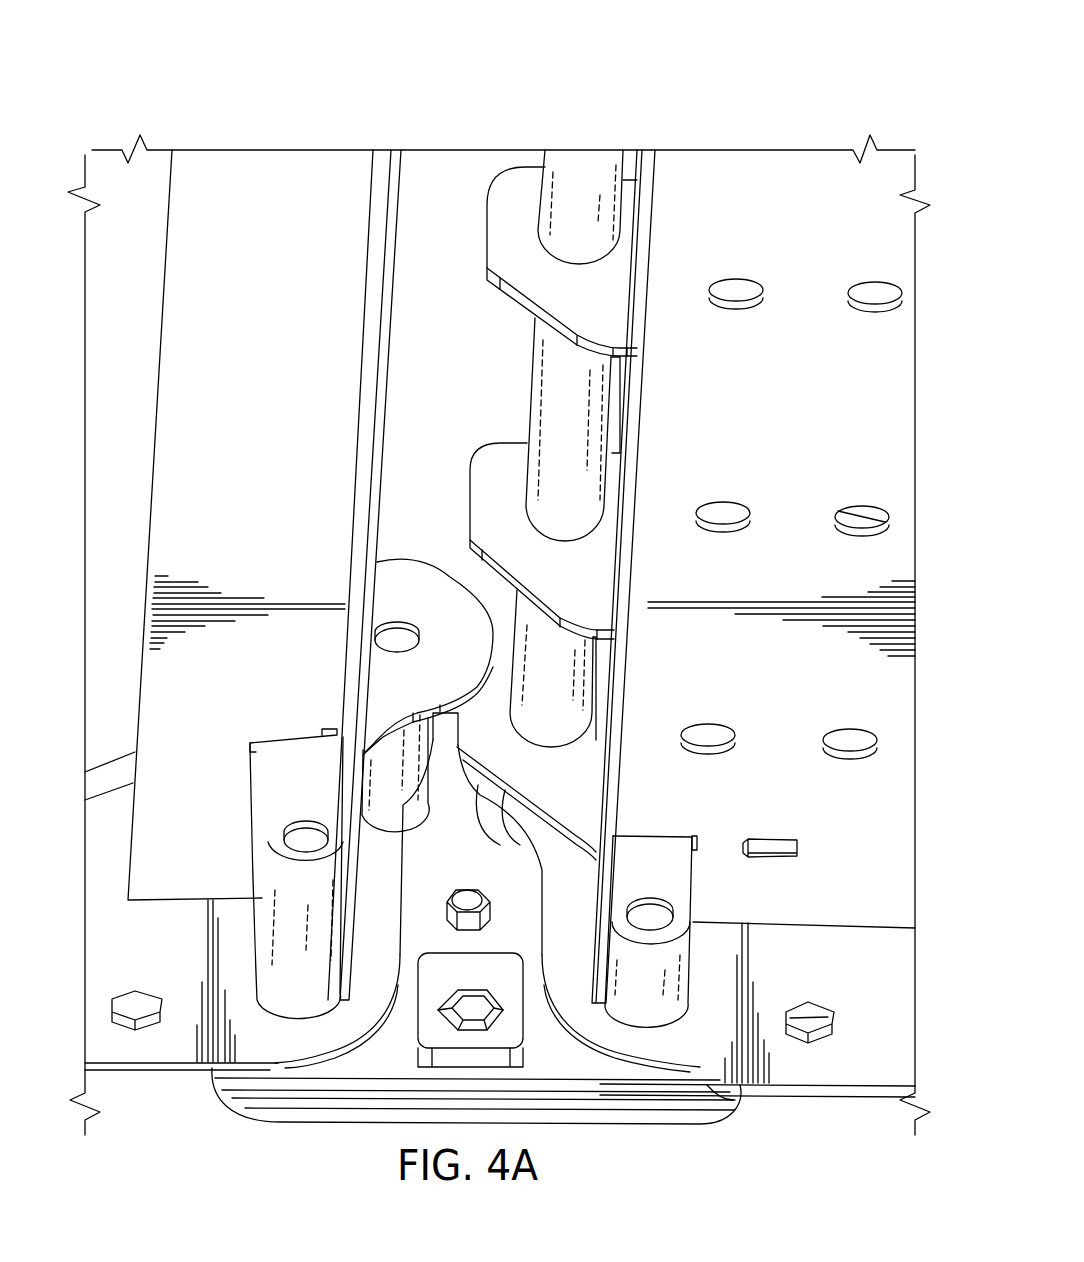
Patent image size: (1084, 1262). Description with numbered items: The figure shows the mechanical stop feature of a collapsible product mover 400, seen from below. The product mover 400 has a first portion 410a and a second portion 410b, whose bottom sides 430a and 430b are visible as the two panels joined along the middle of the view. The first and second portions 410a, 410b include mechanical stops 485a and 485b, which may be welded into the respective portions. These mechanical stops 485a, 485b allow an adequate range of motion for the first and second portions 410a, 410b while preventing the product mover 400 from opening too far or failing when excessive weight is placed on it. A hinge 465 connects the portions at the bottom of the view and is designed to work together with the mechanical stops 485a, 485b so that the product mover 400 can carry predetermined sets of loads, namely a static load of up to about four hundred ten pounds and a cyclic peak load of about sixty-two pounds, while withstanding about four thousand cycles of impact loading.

The product mover 400 is at (323, 66).
The first portion 410a is at (780, 163).
The second portion 410b is at (260, 174).
The bottom side 430a is at (817, 427).
The bottom side 430b is at (264, 497).
The mechanical stop 485a is at (585, 765).
The mechanical stop 485b is at (413, 572).
The hinge 465 is at (641, 1125).